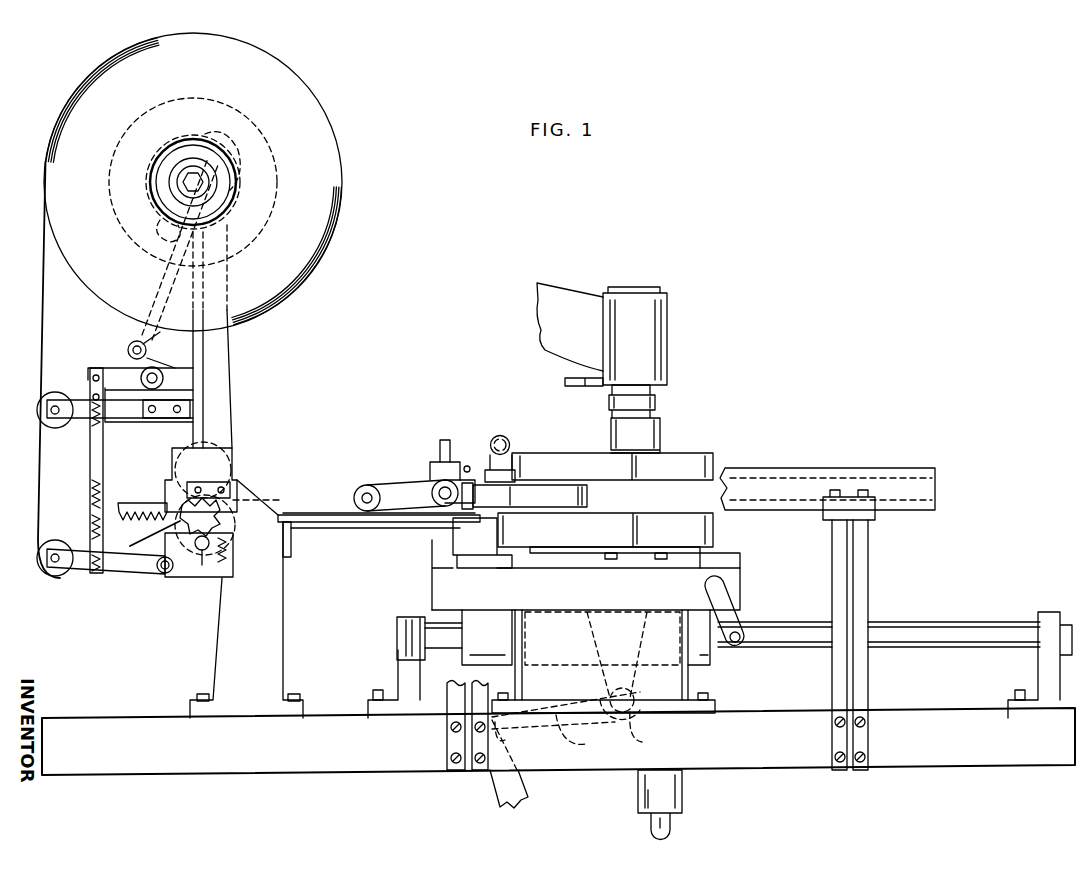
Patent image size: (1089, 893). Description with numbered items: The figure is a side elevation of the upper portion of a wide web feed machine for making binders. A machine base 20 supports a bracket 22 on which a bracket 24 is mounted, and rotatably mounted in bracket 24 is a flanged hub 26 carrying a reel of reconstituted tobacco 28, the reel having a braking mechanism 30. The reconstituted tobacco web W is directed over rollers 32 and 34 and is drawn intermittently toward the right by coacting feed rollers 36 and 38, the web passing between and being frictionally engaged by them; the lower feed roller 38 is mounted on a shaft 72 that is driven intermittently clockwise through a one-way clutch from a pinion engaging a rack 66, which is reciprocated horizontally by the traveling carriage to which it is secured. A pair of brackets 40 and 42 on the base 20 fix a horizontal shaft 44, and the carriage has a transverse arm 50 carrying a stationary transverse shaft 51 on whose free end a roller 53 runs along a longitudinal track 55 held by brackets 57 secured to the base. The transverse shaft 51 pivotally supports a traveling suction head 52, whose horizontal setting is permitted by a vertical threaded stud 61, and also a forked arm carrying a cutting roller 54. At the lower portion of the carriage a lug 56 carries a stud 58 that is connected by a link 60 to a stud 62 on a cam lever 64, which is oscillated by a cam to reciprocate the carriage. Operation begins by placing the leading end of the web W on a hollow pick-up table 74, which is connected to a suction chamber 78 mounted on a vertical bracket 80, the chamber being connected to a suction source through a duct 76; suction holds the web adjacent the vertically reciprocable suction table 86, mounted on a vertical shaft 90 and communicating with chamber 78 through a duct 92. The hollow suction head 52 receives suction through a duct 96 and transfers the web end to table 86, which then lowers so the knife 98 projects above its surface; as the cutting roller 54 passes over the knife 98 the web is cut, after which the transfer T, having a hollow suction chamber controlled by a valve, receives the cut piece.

The machine base 20 is at (1052, 757).
The bracket 22 is at (284, 632).
The bracket 24 is at (232, 392).
The flanged hub 26 is at (255, 124).
The reel of reconstituted tobacco 28 is at (322, 118).
The braking mechanism 30 is at (102, 345).
The roller 32 is at (68, 430).
The roller 34 is at (70, 533).
The feed roller 36 is at (235, 472).
The lower feed roller 38 is at (234, 542).
The bracket 40 is at (398, 663).
The bracket 42 is at (1040, 660).
The horizontal shaft 44 is at (950, 622).
The transverse arm 50 is at (442, 442).
The transverse shaft 51 is at (440, 486).
The traveling suction head 52 is at (590, 496).
The roller 53 is at (433, 497).
The cutting roller 54 is at (365, 490).
The longitudinal track 55 is at (372, 486).
The lug 56 is at (635, 732).
The bracket 57 is at (455, 695).
The stud 58 is at (648, 712).
The link 60 is at (580, 742).
The vertical threaded stud 61 is at (470, 466).
The stud 62 is at (522, 740).
The cam lever 64 is at (534, 792).
The rack 66 is at (148, 503).
The shaft 72 is at (200, 572).
The hollow pick-up table 74 is at (455, 545).
The duct 76 is at (740, 614).
The suction chamber 78 is at (742, 577).
The vertical bracket 80 is at (676, 684).
The vertically reciprocable suction table 86 is at (716, 533).
The vertical shaft 90 is at (678, 559).
The duct 92 is at (609, 560).
The duct 96 is at (508, 441).
The knife 98 is at (486, 560).
The reconstituted tobacco web W is at (38, 339).
The transfer T is at (701, 351).